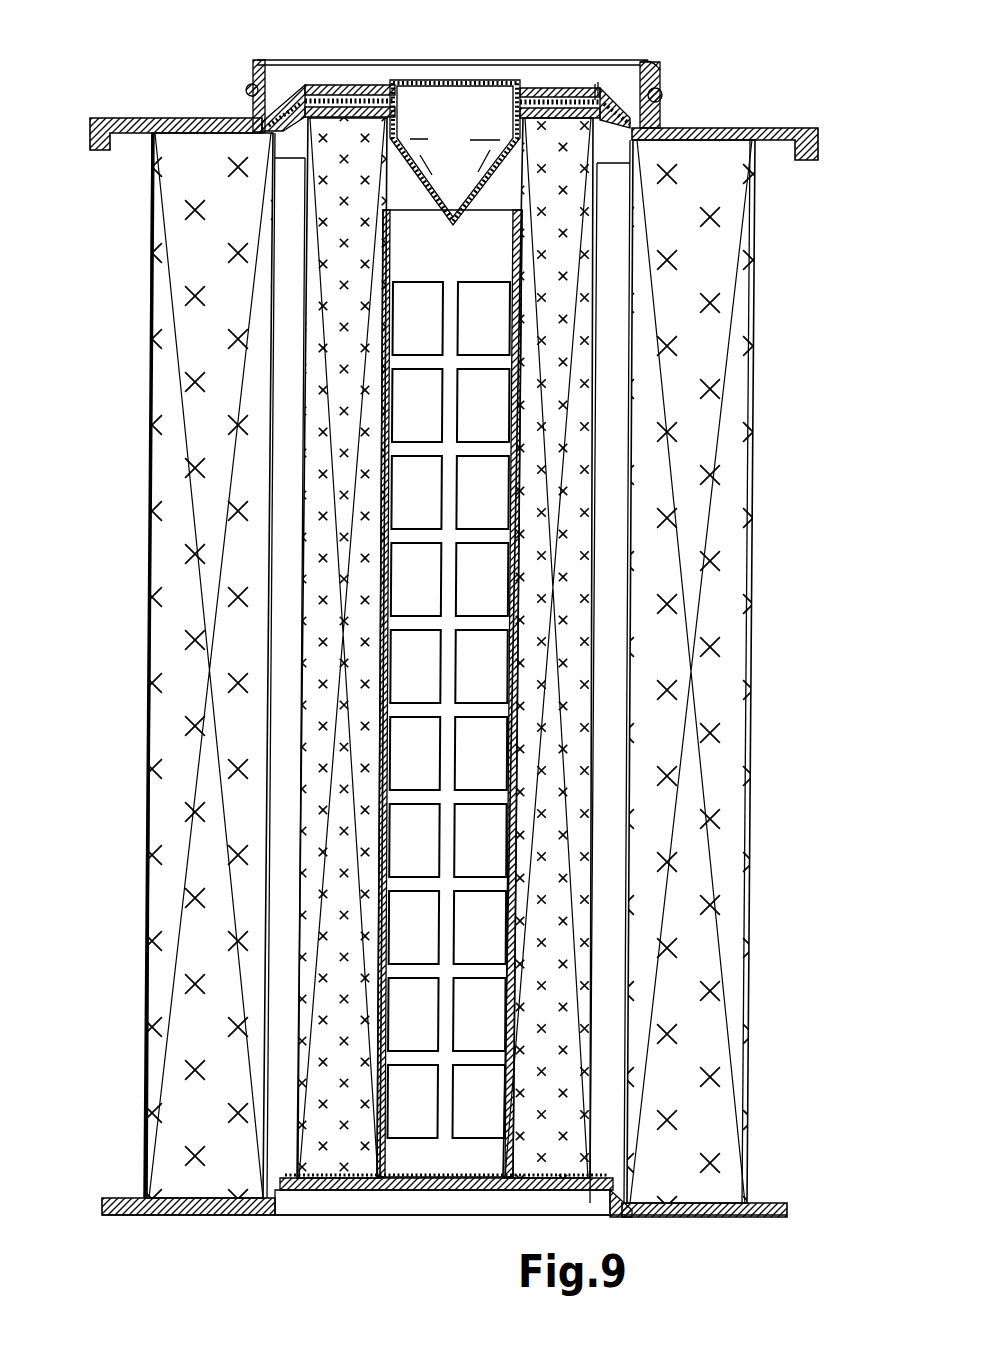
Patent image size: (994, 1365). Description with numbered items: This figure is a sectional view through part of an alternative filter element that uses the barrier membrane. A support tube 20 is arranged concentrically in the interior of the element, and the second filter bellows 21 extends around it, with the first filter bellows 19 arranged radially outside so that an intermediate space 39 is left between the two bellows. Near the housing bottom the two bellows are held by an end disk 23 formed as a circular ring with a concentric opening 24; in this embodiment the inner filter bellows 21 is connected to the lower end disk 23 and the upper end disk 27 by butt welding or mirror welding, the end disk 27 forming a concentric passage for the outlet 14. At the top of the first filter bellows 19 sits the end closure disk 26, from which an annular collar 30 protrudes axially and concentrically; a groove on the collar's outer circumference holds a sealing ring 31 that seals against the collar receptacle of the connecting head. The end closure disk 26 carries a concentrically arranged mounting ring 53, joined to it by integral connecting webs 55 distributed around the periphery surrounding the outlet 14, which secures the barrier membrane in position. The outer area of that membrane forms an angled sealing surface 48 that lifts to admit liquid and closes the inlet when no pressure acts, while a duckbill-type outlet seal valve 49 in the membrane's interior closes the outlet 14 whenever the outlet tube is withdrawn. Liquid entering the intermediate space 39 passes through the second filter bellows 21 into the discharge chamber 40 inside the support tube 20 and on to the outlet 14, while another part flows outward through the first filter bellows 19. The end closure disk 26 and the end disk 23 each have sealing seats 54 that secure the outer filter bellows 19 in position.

The outlet 14 is at (417, 90).
The first filter bellows 19 is at (712, 688).
The support tube 20 is at (470, 948).
The second filter bellows 21 is at (570, 764).
The end disk 23 is at (205, 1217).
The concentric opening 24 is at (421, 1185).
The end disk seal 26 is at (778, 127).
The end disk 27 is at (333, 88).
The annular collar 30 is at (655, 62).
The sealing ring 31 is at (664, 94).
The intermediate space 39 is at (622, 400).
The discharge chamber 40 is at (430, 420).
The sealing surface 48 is at (625, 100).
The outlet seal valve 49 is at (453, 203).
The mounting ring 53 is at (568, 88).
The sealing seats 54 is at (260, 143).
The connecting webs 55 is at (292, 97).